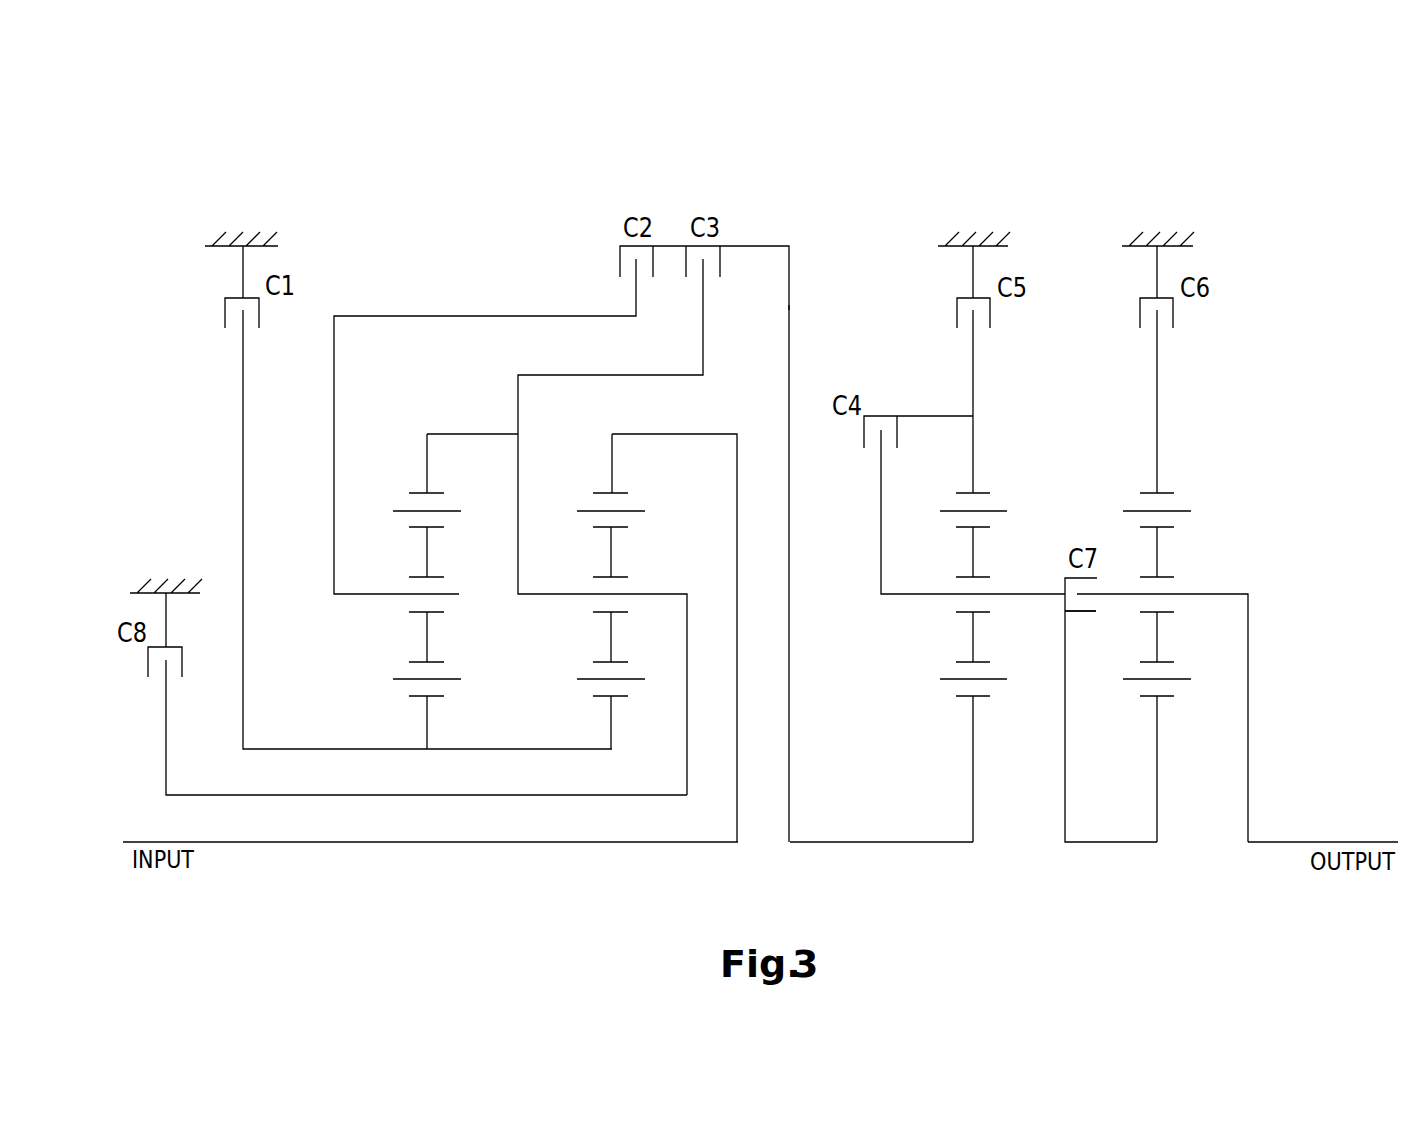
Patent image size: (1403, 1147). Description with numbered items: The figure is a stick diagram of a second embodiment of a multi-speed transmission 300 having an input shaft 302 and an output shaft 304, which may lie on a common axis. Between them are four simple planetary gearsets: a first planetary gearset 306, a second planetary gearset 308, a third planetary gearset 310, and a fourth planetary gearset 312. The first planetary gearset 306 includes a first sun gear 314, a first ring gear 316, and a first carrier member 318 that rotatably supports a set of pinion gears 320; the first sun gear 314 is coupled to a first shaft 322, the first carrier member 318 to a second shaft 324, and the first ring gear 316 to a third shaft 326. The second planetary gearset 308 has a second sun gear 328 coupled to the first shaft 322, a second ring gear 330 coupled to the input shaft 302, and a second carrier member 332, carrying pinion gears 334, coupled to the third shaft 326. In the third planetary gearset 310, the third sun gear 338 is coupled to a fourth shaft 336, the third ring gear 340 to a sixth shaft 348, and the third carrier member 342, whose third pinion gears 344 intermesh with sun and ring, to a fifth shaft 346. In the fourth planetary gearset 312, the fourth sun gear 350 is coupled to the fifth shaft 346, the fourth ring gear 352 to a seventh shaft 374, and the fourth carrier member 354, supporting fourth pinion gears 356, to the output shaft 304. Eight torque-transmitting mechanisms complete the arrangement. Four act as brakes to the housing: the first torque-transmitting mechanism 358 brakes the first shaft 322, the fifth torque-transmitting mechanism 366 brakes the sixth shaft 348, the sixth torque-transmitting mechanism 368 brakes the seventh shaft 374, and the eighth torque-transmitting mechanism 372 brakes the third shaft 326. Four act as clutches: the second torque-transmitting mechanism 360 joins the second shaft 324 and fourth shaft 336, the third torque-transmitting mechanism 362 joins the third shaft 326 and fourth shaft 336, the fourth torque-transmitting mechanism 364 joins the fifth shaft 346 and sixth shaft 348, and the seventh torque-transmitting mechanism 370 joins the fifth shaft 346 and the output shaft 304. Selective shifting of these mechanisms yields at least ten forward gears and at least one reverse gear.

The multi-speed transmission 300 is at (183, 178).
The input shaft 302 is at (262, 845).
The output shaft 304 is at (1340, 842).
The first planetary gearset 306 is at (391, 637).
The second planetary gearset 308 is at (591, 636).
The third planetary gearset 310 is at (951, 702).
The fourth planetary gearset 312 is at (1196, 701).
The first sun gear 314 is at (388, 690).
The first ring gear 316 is at (413, 478).
The first carrier member 318 is at (392, 609).
The set of pinion gears 320 is at (437, 577).
The first shaft 322 is at (243, 484).
The second shaft 324 is at (383, 316).
The third shaft 326 is at (465, 434).
The second sun gear 328 is at (570, 690).
The second ring gear 330 is at (598, 480).
The second carrier member 332 is at (578, 610).
The set of pinion gears 334 is at (620, 577).
The fourth shaft 336 is at (789, 305).
The third sun gear 338 is at (956, 710).
The third ring gear 340 is at (992, 479).
The third carrier member 342 is at (992, 568).
The third pinion gears 344 is at (963, 613).
The fifth shaft 346 is at (881, 553).
The sixth shaft 348 is at (973, 358).
The fourth sun gear 350 is at (1174, 710).
The fourth ring gear 352 is at (1176, 480).
The fourth carrier member 354 is at (1190, 572).
The fourth pinion gears 356 is at (1165, 612).
The first torque-transmitting mechanism 358 is at (225, 318).
The second torque-transmitting mechanism 360 is at (620, 262).
The third torque-transmitting mechanism 362 is at (720, 260).
The fourth torque-transmitting mechanism 364 is at (864, 432).
The fifth torque-transmitting mechanism 366 is at (957, 318).
The sixth torque-transmitting mechanism 368 is at (1140, 318).
The seventh torque-transmitting mechanism 370 is at (1082, 612).
The eighth torque-transmitting mechanism 372 is at (148, 663).
The seventh shaft 374 is at (1157, 390).